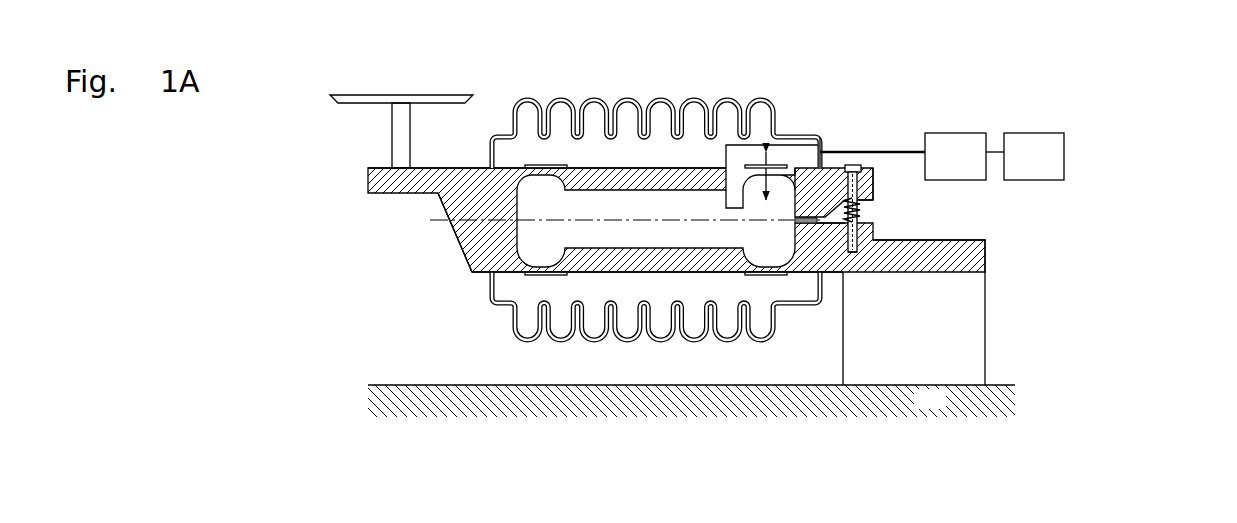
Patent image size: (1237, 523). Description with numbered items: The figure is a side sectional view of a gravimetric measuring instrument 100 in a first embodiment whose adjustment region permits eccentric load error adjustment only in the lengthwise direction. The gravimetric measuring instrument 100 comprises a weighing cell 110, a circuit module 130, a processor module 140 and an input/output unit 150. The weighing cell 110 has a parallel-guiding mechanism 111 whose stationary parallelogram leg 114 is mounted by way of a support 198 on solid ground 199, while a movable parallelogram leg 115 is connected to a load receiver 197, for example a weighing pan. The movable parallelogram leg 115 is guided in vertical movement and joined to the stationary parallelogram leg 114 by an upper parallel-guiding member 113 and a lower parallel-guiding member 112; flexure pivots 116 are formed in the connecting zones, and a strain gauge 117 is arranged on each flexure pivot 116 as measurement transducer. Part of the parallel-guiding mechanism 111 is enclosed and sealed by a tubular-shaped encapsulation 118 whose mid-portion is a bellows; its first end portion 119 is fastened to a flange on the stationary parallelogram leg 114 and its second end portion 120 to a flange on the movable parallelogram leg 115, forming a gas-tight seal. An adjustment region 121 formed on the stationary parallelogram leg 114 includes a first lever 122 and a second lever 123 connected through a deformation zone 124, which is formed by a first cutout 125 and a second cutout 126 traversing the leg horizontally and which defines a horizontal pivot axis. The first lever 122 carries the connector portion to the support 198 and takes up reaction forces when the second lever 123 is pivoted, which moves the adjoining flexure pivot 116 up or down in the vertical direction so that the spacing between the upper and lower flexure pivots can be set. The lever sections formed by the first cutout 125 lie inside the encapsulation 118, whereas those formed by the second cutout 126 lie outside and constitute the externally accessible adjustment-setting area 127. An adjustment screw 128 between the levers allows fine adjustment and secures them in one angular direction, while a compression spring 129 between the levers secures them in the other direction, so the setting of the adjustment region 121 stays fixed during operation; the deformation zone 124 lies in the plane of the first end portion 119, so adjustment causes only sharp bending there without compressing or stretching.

The gravimetric measuring instrument 100 is at (988, 110).
The weighing cell 110 is at (578, 348).
The parallel-guiding mechanism 111 is at (690, 283).
The lower parallel-guiding member 112 is at (650, 250).
The upper parallel-guiding member 113 is at (635, 178).
The stationary parallelogram leg 114 is at (806, 190).
The movable parallelogram leg 115 is at (457, 210).
The flexure pivots 116 is at (542, 276).
The strain gauge 117 is at (544, 165).
The tubular-shaped encapsulation 118 is at (665, 125).
The first end portion 119 is at (839, 101).
The second end portion 120 is at (492, 290).
The adjustment region 121 is at (866, 215).
The first lever 122 is at (950, 256).
The second lever 123 is at (873, 178).
The deformation zone 124 is at (830, 224).
The first cutout 125 is at (809, 224).
The second cutout 126 is at (850, 252).
The adjustment-setting area 127 is at (866, 158).
The adjustment screw 128 is at (858, 166).
The compression spring 129 is at (862, 207).
The circuit module 130 is at (748, 150).
The processor module 140 is at (955, 156).
The input/output unit 150 is at (1025, 156).
The load receiver 197 is at (398, 100).
The support 198 is at (914, 328).
The solid ground 199 is at (691, 401).